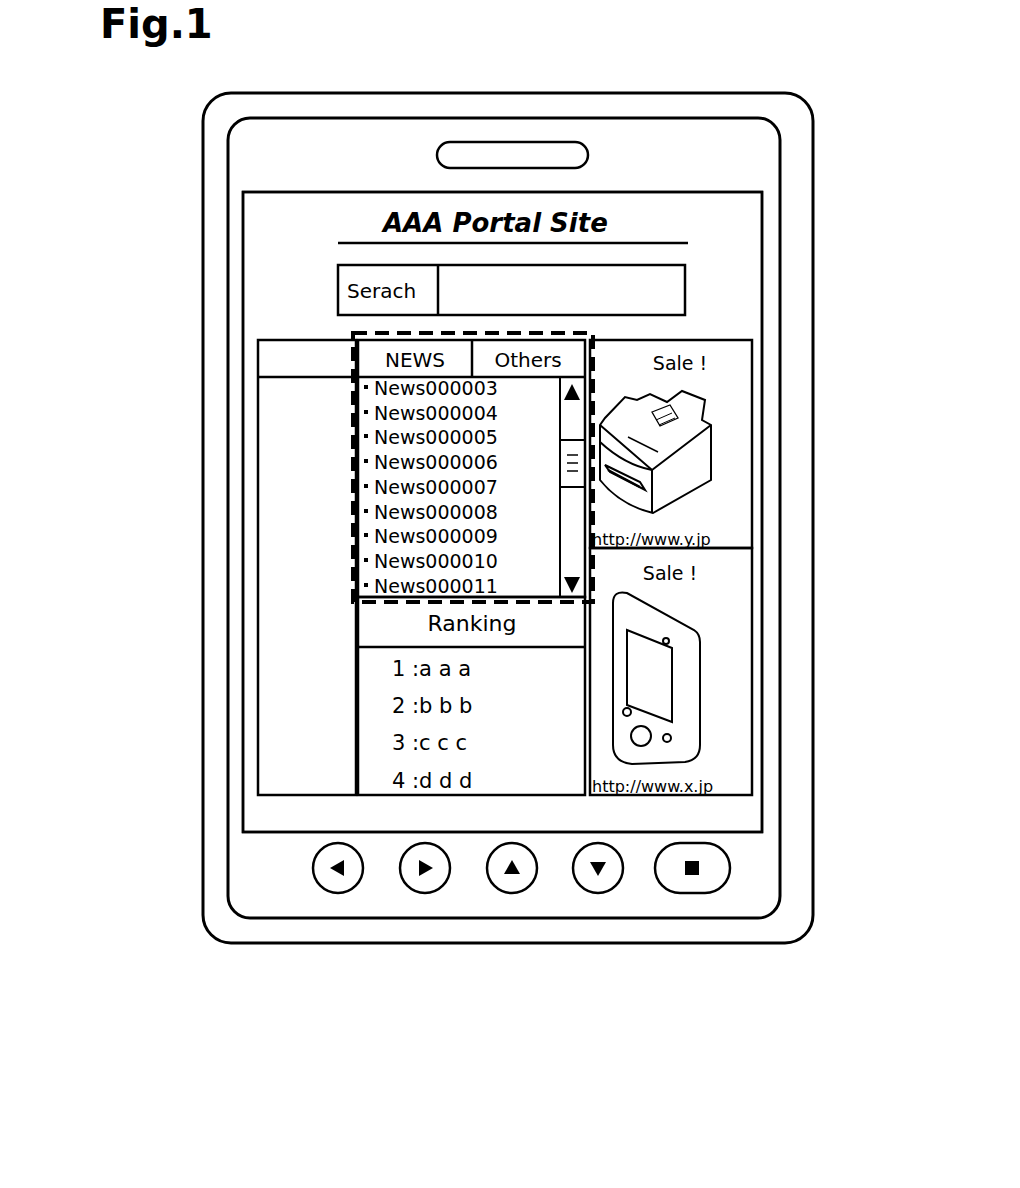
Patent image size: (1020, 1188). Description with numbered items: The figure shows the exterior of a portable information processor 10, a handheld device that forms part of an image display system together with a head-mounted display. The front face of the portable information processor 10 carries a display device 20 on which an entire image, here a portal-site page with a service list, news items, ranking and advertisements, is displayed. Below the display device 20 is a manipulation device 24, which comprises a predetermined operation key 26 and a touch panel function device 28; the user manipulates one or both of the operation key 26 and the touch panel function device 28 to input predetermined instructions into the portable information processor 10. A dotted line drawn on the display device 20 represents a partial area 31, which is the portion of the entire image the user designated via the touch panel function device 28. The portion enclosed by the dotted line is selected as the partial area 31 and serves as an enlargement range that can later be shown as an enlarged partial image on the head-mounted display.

The portable information processor 10 is at (513, 72).
The display device 20 is at (341, 192).
The manipulation device 24 is at (502, 617).
The operation key 26 is at (735, 887).
The touch panel function device 28 is at (338, 808).
The partial area 31 is at (352, 422).